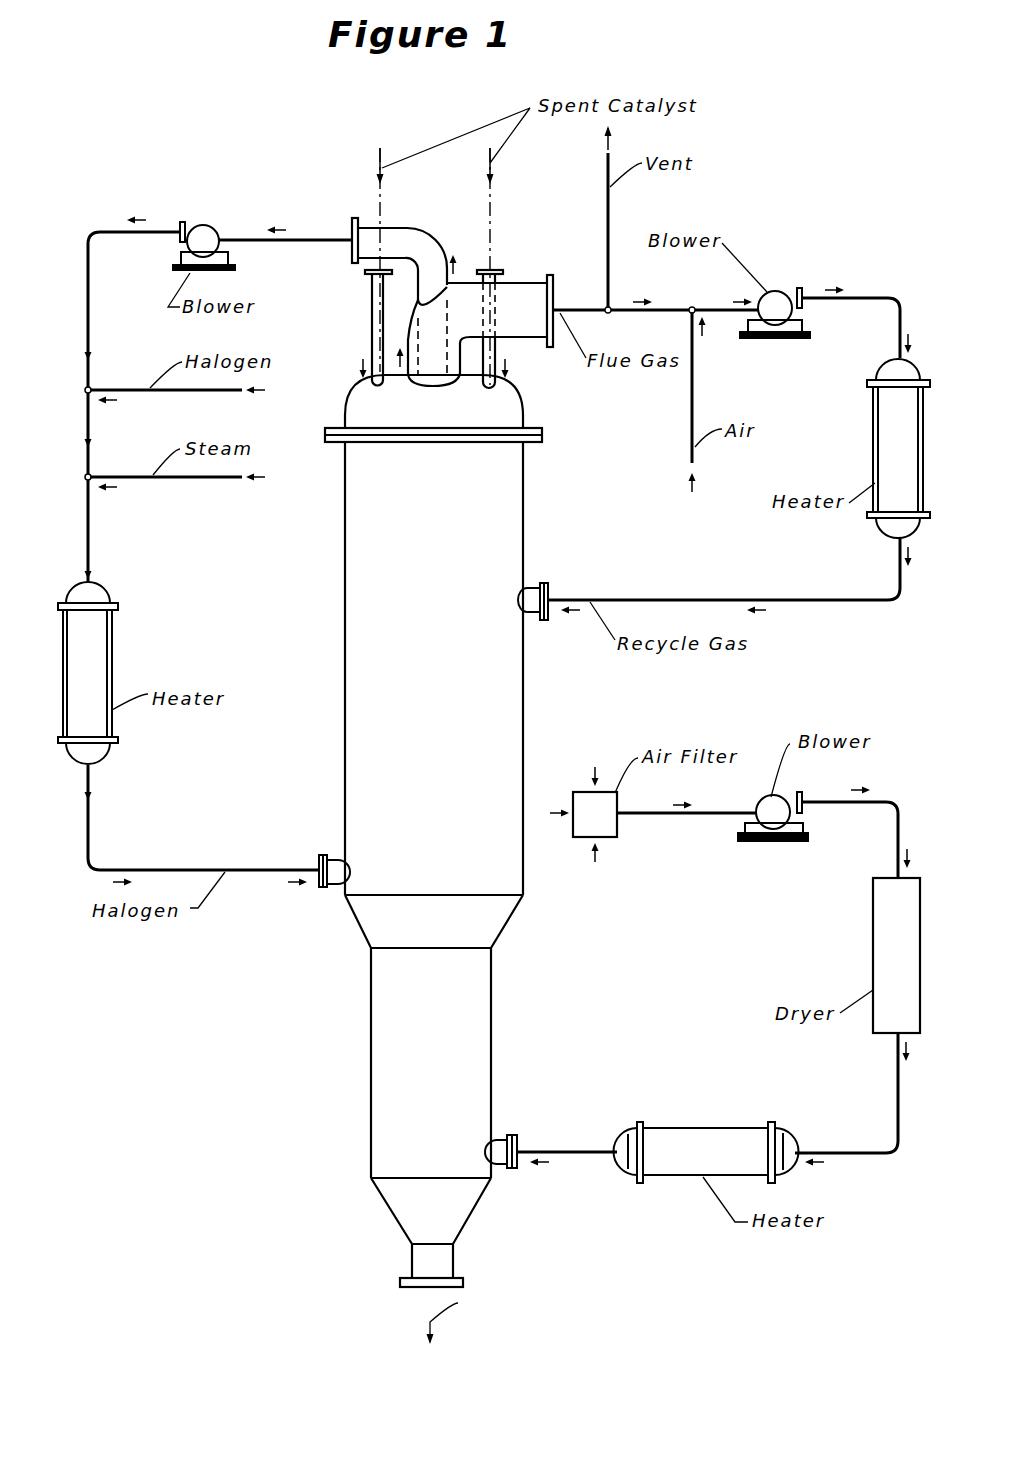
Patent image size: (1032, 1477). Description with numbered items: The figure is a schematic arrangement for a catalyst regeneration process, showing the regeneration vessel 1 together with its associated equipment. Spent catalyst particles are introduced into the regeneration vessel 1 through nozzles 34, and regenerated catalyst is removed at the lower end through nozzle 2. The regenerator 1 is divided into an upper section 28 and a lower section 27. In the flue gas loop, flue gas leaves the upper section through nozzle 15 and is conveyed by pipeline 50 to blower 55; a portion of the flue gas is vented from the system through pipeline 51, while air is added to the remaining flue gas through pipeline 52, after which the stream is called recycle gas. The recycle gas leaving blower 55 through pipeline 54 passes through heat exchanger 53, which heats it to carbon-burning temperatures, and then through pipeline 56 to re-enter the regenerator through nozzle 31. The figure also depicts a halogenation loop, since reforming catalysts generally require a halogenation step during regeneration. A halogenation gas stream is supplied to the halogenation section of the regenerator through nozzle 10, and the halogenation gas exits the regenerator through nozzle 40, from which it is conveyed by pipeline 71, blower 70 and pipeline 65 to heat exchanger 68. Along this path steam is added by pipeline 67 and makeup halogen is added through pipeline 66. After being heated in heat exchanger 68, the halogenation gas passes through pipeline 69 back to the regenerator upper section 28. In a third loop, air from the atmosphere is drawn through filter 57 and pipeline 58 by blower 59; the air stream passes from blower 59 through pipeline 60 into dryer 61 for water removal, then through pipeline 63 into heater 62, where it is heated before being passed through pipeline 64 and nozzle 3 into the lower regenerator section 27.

The regeneration vessel 1 is at (525, 524).
The nozzle 2 is at (413, 1258).
The nozzle 3 is at (512, 1133).
The nozzle 10 is at (325, 893).
The nozzle 15 is at (552, 278).
The lower section 27 is at (490, 1055).
The upper section 28 is at (345, 655).
The nozzle 31 is at (545, 583).
The nozzles 34 is at (368, 300).
The nozzle 40 is at (395, 225).
The pipeline 50 is at (732, 310).
The pipeline 51 is at (610, 218).
The pipeline 52 is at (692, 392).
The heat exchanger 53 is at (875, 405).
The pipeline 54 is at (898, 341).
The blower 55 is at (781, 291).
The pipeline 56 is at (690, 599).
The filter 57 is at (612, 837).
The pipeline 58 is at (650, 815).
The blower 59 is at (786, 798).
The pipeline 60 is at (898, 833).
The dryer 61 is at (873, 900).
The heater 62 is at (690, 1130).
The pipeline 63 is at (820, 1153).
The pipeline 64 is at (568, 1155).
The pipeline 65 is at (105, 235).
The pipeline 66 is at (210, 392).
The pipeline 67 is at (210, 480).
The heat exchanger 68 is at (112, 653).
The pipeline 69 is at (150, 870).
The blower 70 is at (208, 227).
The pipeline 71 is at (300, 243).